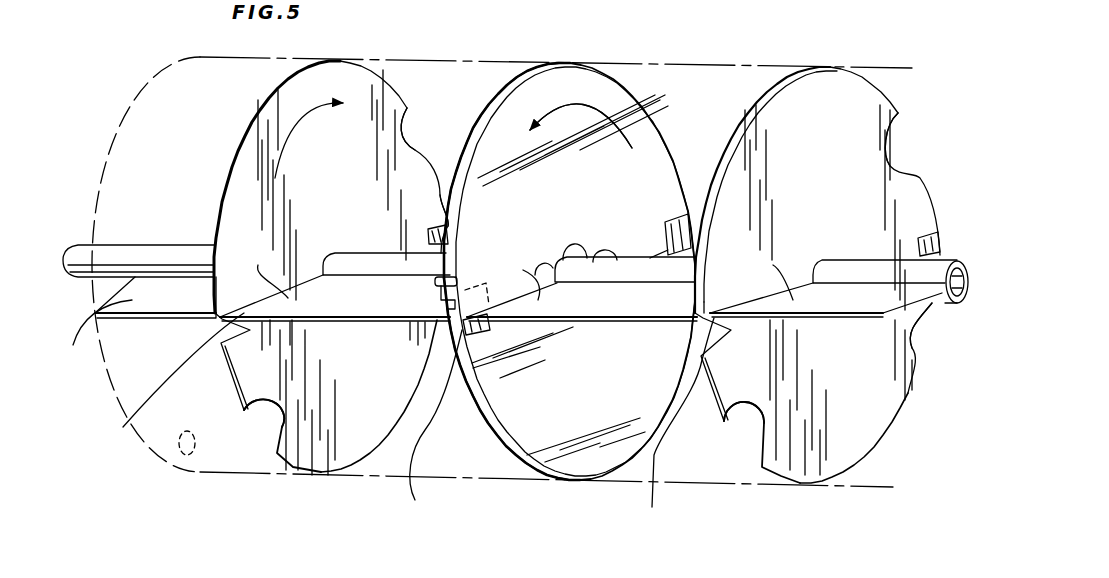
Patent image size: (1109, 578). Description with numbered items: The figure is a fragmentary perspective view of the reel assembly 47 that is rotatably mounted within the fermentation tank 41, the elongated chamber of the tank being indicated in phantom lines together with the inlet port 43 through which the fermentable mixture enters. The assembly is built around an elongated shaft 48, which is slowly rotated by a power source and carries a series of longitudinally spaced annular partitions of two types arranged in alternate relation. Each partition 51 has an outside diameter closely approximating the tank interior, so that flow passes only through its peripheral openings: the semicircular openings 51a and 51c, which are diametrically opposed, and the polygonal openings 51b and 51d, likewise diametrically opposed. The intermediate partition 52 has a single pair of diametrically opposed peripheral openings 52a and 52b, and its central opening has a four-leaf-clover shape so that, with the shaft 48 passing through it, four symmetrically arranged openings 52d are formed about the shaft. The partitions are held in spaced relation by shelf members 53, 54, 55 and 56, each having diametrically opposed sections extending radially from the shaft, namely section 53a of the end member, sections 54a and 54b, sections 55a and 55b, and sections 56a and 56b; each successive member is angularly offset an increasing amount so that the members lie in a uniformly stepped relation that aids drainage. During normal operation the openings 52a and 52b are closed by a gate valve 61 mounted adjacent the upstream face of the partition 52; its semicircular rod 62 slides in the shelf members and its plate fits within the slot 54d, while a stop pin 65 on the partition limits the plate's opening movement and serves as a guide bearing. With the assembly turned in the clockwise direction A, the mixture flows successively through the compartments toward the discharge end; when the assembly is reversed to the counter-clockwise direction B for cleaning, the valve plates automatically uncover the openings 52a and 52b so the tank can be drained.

The tank 41 is at (236, 474).
The port 43 is at (171, 480).
The reel assembly 47 is at (620, 100).
The elongated shaft 48 is at (153, 262).
The annular partition 51 is at (308, 196).
The peripheral opening 51a is at (410, 137).
The peripheral opening 51b is at (437, 213).
The peripheral opening 51c is at (263, 447).
The peripheral opening 51d is at (125, 424).
The annular partition 52 is at (568, 199).
The peripheral opening 52a is at (717, 172).
The peripheral opening 52b is at (436, 423).
The central openings 52d is at (597, 256).
The shelf member 53 is at (161, 298).
The shelf member section 53a is at (97, 334).
The shelf member 54 is at (344, 298).
The shelf member section 54a is at (265, 271).
The shelf member section 54b is at (429, 250).
The slot 54d is at (443, 320).
The shelf member 55 is at (578, 298).
The shelf member section 55a is at (516, 276).
The shelf member section 55b is at (690, 216).
The shelf member 56 is at (836, 298).
The shelf member section 56a is at (763, 277).
The shelf member section 56b is at (933, 240).
The gate valve 61 is at (485, 99).
The elongated rod 62 is at (483, 443).
The stop pin 65 is at (470, 276).
The clockwise direction A is at (293, 122).
The counter-clockwise direction B is at (563, 106).